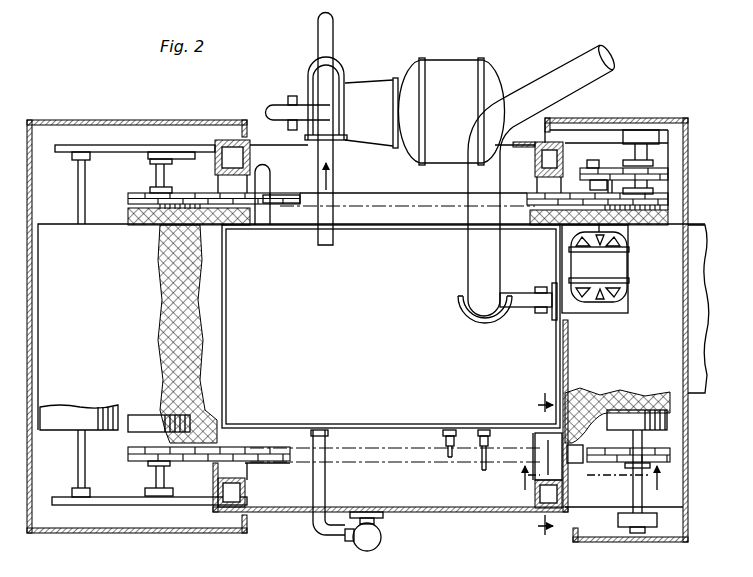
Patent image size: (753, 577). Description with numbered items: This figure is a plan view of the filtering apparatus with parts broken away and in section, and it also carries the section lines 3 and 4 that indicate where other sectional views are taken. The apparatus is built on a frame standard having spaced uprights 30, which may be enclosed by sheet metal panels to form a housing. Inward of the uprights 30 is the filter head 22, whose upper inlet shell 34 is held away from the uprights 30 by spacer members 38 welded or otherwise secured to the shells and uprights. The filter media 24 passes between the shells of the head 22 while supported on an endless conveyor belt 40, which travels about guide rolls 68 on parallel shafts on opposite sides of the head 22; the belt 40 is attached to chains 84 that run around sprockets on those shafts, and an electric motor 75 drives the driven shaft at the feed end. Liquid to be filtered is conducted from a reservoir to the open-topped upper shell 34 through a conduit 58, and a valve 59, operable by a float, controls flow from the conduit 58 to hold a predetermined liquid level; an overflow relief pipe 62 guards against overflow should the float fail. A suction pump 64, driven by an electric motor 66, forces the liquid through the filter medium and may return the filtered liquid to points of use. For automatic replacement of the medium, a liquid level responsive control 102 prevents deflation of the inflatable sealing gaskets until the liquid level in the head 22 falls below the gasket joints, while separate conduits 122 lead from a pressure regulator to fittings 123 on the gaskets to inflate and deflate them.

The filter head 22 is at (394, 218).
The filter media 24 is at (700, 340).
The uprights 30 is at (247, 150).
The inlet fluid conductor or shell 34 is at (382, 435).
The spacer members 38 is at (222, 188).
The feed means or conveyor belt 40 is at (163, 316).
The conduit 58 is at (567, 71).
The valve 59 is at (462, 307).
The overflow relief drain or pipe 62 is at (266, 223).
The suction or exhaust pump 64 is at (343, 70).
The electric motor 66 is at (452, 70).
The guide rolls 68 is at (142, 423).
The electric motor 75 is at (615, 269).
The chains 84 is at (290, 198).
The liquid level responsive control 102 is at (381, 540).
The conduits 122 is at (449, 457).
The fittings 123 is at (447, 432).
The section line 3- 3 is at (545, 466).
The section line 4- 4 is at (591, 478).